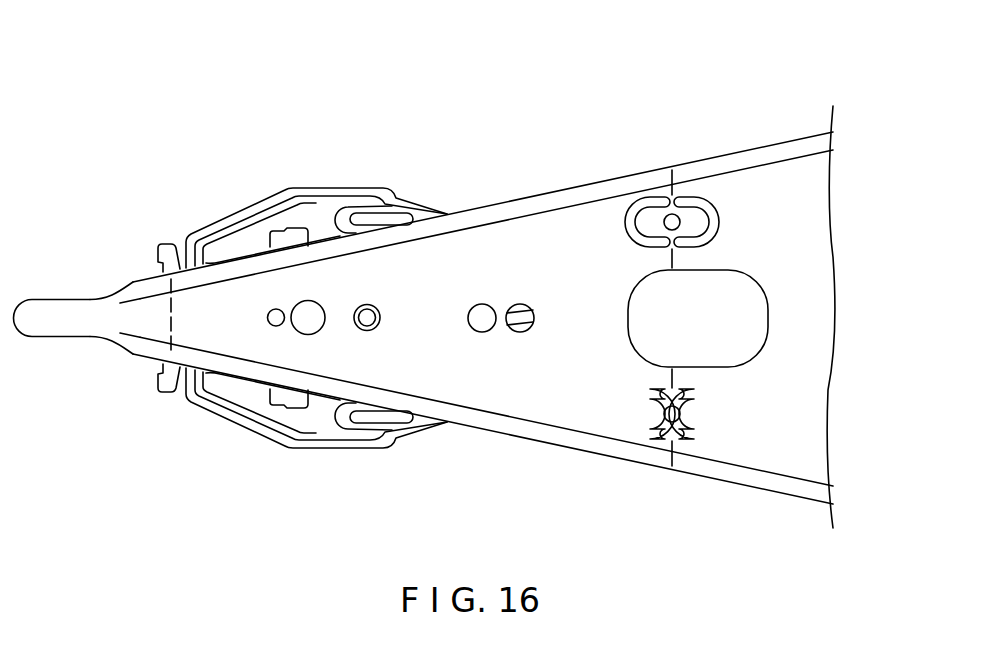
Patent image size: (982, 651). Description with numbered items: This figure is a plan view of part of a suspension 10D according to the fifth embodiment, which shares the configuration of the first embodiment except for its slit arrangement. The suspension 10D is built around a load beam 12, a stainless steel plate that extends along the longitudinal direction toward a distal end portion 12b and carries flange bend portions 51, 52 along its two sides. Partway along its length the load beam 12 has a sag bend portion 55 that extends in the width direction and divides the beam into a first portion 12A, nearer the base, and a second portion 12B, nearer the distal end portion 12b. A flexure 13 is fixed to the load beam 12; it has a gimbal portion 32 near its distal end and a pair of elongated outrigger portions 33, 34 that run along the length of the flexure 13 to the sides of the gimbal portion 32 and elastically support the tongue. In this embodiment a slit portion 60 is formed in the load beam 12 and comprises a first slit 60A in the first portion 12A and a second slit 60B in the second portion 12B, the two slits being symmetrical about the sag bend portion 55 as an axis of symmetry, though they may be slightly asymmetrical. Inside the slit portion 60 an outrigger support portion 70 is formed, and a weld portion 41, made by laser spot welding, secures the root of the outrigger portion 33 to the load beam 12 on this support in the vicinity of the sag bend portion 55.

The suspension 10D is at (375, 100).
The load beam 12 is at (773, 145).
The first portion 12A is at (821, 268).
The distal end portion 12b is at (48, 310).
The second portion 12B is at (488, 395).
The flexure 13 is at (319, 192).
The gimbal portion 32 is at (322, 237).
The outrigger portion 33 is at (422, 431).
The outrigger portion 34 is at (437, 212).
The first weld portion 41 is at (678, 218).
The flange bend portion 51 is at (582, 445).
The flange bend portion 52 is at (585, 196).
The sag bend portion 55 is at (668, 261).
The slit portion 60 is at (666, 321).
The first slit 60A is at (695, 196).
The second slit 60B is at (647, 196).
The outrigger support portion 70 is at (643, 222).